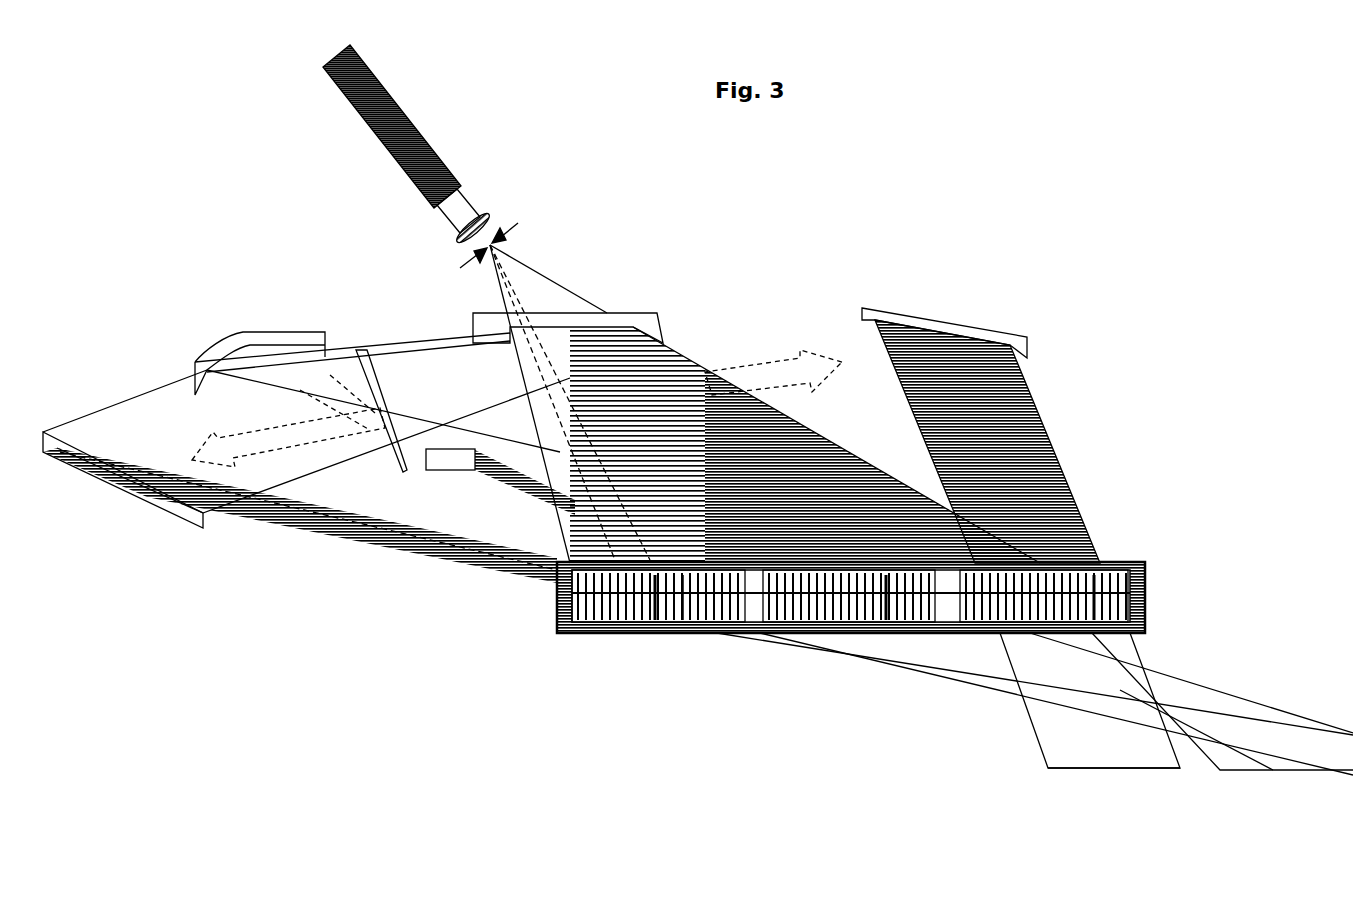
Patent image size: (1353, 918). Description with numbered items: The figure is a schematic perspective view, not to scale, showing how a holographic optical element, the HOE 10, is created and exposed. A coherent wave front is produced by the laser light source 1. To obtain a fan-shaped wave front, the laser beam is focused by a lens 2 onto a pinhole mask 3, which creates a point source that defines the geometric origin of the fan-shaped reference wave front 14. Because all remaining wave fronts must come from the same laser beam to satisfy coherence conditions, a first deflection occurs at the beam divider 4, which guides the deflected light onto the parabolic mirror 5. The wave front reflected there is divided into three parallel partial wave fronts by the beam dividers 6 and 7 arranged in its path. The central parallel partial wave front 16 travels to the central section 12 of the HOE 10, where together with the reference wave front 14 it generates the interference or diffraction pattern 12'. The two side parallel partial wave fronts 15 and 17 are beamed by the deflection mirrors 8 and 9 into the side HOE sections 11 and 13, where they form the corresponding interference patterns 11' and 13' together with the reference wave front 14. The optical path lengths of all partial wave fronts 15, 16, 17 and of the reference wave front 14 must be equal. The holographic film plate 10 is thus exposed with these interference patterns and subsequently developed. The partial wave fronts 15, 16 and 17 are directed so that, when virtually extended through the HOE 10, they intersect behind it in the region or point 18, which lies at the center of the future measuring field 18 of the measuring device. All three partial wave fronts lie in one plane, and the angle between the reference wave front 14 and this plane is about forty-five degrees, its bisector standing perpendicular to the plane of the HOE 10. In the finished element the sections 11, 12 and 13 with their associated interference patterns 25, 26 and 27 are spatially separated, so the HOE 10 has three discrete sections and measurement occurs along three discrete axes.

The laser light source 1 is at (380, 73).
The lens 2 is at (488, 203).
The pinhole mask 3 is at (487, 260).
The beam divider 4 is at (588, 323).
The parabolic mirror 5 is at (213, 350).
The beam divider 6 is at (393, 373).
The beam divider 7 is at (440, 473).
The deflection mirror 8 is at (175, 500).
The deflection mirror 9 is at (927, 318).
The HOE 10 is at (901, 614).
The HOE section 11 is at (641, 647).
The interference pattern 25 is at (620, 620).
The HOE section 12 is at (835, 648).
The interference pattern 26 is at (840, 617).
The HOE section 13 is at (1098, 562).
The interference pattern 27 is at (1085, 562).
The interference pattern 11' is at (641, 640).
The interference pattern 12' is at (867, 649).
The interference pattern 13' is at (1154, 624).
The reference wave front 14 is at (647, 417).
The parallel partial wave front 15 is at (473, 563).
The parallel partial wave front 16 is at (683, 593).
The parallel partial wave front 17 is at (1027, 430).
The region/point 18 is at (1048, 675).